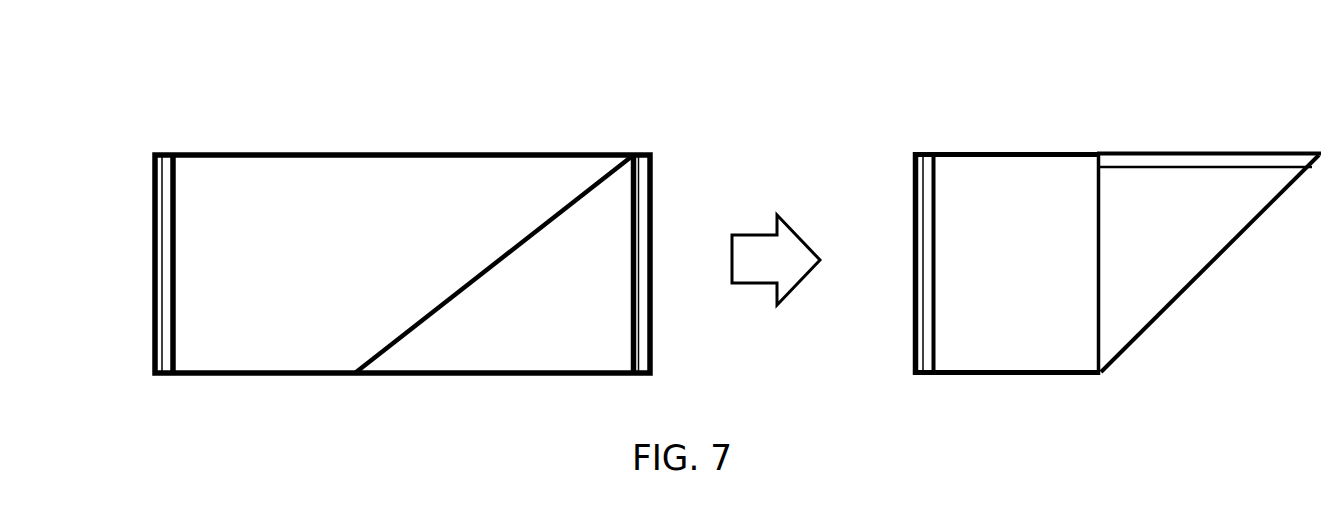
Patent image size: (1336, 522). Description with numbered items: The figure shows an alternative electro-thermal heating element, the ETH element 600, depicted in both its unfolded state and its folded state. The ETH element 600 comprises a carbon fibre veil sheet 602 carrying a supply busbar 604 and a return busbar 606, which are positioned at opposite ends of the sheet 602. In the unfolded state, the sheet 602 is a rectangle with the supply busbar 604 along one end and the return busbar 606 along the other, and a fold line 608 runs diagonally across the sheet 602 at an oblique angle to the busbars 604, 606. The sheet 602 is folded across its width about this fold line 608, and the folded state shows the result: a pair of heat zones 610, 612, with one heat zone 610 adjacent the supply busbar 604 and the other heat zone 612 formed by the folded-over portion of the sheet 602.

The ETH element 600 is at (700, 199).
The carbon fibre veil sheet 602 is at (345, 163).
The supply busbar 604 is at (163, 280).
The return busbar 606 is at (638, 328).
The fold line 608 is at (485, 270).
The heat zone 610 is at (1030, 280).
The heat zone 612 is at (1180, 238).